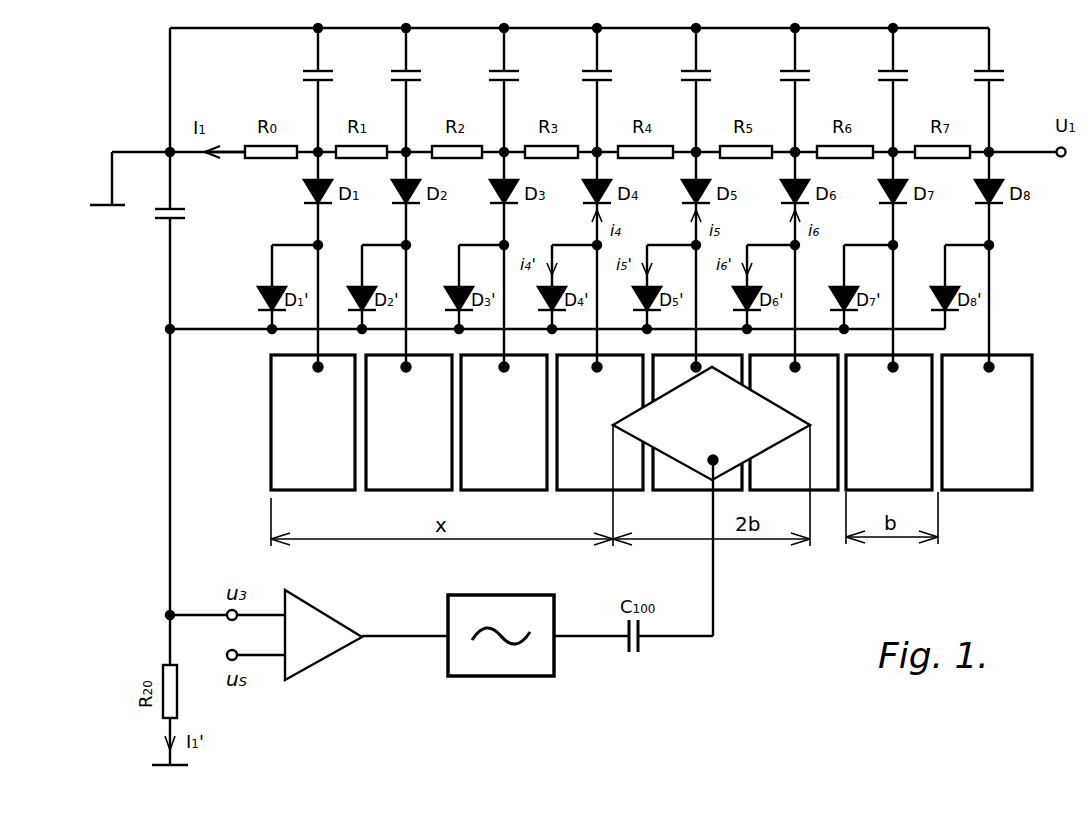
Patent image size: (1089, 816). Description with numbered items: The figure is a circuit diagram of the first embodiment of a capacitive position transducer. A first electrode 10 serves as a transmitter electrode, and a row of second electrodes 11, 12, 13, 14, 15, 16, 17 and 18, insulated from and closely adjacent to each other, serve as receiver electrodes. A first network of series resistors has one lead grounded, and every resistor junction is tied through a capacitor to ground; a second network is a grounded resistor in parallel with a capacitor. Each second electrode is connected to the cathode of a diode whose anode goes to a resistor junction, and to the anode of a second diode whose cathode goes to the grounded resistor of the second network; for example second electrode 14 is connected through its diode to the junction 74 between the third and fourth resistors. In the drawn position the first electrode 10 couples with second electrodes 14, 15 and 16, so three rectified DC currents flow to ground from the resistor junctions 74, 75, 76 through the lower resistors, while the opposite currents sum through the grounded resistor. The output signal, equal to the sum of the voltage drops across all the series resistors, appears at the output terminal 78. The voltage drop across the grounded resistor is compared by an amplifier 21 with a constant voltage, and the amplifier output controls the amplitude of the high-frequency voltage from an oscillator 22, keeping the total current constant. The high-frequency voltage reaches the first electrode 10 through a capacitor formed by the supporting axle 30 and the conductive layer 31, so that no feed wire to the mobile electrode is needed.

The first electrode 10 is at (711, 423).
The second electrode 11 is at (313, 422).
The second electrode 12 is at (409, 422).
The second electrode 13 is at (504, 422).
The second electrode 14 is at (600, 422).
The second electrode 15 is at (697, 422).
The second electrode 16 is at (794, 422).
The second electrode 17 is at (889, 422).
The second electrode 18 is at (987, 422).
The amplifier 21 is at (318, 633).
The oscillator 22 is at (509, 603).
The supporting axle 30 is at (627, 645).
The conductive layer 31 is at (642, 645).
The junction 74 is at (600, 144).
The resistor junction 75 is at (699, 144).
The resistor junction 76 is at (798, 144).
The output terminal 78 is at (992, 146).